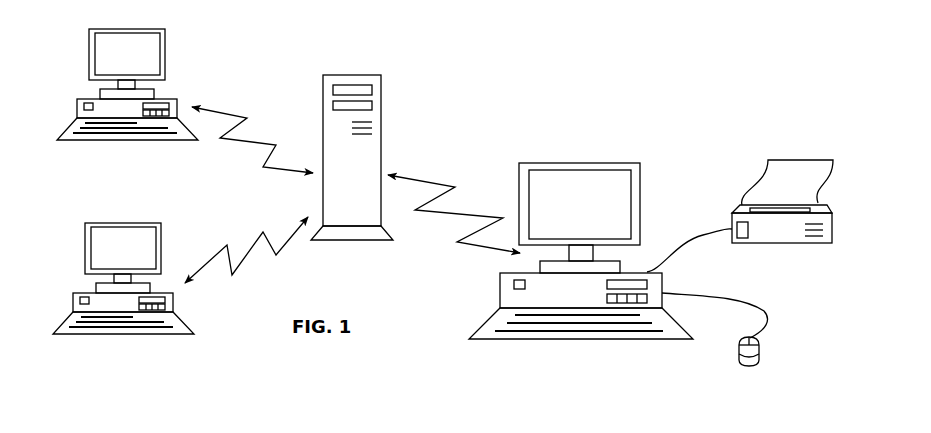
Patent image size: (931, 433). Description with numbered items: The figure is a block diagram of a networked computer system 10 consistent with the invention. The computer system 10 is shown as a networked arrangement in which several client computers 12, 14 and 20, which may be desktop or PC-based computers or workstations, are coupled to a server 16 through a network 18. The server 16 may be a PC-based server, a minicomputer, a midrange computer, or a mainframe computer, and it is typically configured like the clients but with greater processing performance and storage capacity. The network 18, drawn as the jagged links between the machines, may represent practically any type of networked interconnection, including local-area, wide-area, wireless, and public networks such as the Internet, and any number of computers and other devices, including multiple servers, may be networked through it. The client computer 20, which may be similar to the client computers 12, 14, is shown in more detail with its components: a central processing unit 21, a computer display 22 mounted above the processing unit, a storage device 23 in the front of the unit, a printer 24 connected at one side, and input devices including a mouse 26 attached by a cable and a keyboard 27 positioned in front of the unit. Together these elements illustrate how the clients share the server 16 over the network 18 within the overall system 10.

The computer system 10 is at (510, 80).
The client computer 12 is at (89, 43).
The client computer 14 is at (85, 227).
The server 16 is at (340, 75).
The network 18 is at (260, 145).
The client computer 20 is at (632, 162).
The central processing unit 21 is at (508, 295).
The computer display 22 is at (553, 167).
The storage device 23 is at (623, 303).
The printer 24 is at (745, 212).
The mouse 26 is at (758, 355).
The keyboard 27 is at (488, 337).